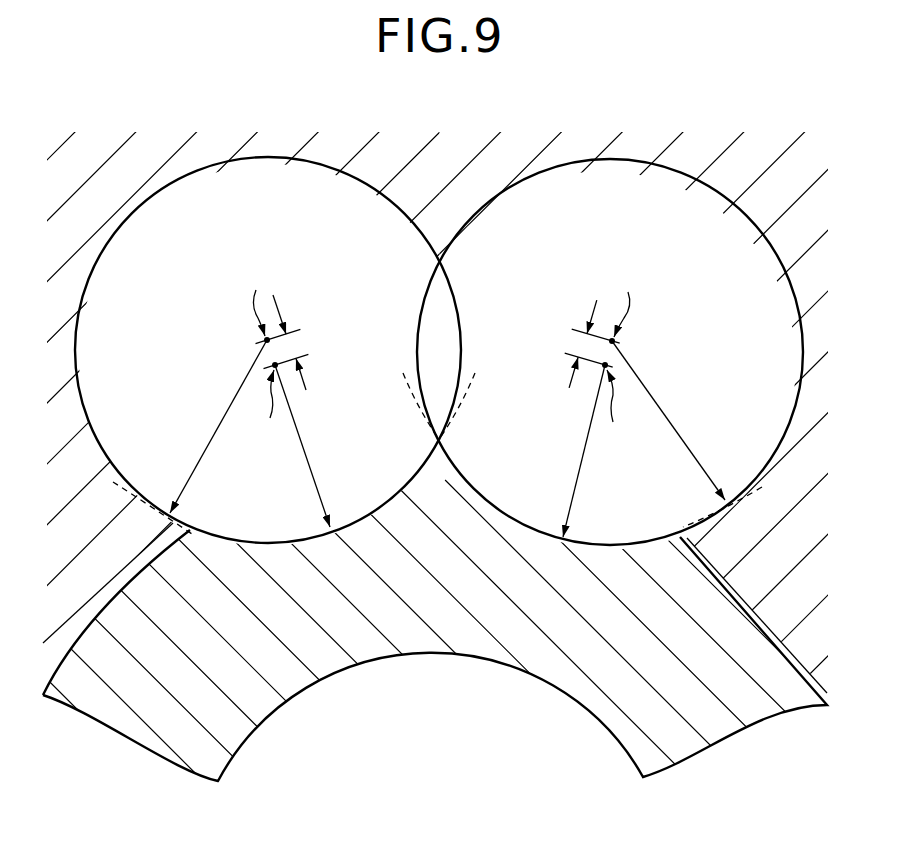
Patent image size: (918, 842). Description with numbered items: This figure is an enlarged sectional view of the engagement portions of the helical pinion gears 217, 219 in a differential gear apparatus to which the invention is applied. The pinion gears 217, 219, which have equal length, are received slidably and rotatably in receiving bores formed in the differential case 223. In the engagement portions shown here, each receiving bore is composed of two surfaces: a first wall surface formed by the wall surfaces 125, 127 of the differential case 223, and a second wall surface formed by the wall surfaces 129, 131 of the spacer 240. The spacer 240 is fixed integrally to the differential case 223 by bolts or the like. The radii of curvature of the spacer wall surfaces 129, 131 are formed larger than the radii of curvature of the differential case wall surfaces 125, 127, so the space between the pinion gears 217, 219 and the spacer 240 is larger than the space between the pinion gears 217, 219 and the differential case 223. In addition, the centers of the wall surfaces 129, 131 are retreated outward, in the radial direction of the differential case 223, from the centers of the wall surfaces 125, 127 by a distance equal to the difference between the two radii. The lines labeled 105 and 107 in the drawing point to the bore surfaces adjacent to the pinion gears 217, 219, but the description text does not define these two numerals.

The wall surface of the differential case 127 is at (212, 162).
The wall surface of the differential case 125 is at (640, 162).
The differential case 223 is at (496, 121).
The helical pinion gear 219 is at (300, 231).
The helical pinion gear 217 is at (638, 247).
The first bore surface 107 is at (121, 234).
The second bore surface 105 is at (768, 256).
The wall surface of the spacer 131 is at (188, 534).
The wall surface of the spacer 129 is at (683, 538).
The spacer 240 is at (433, 650).